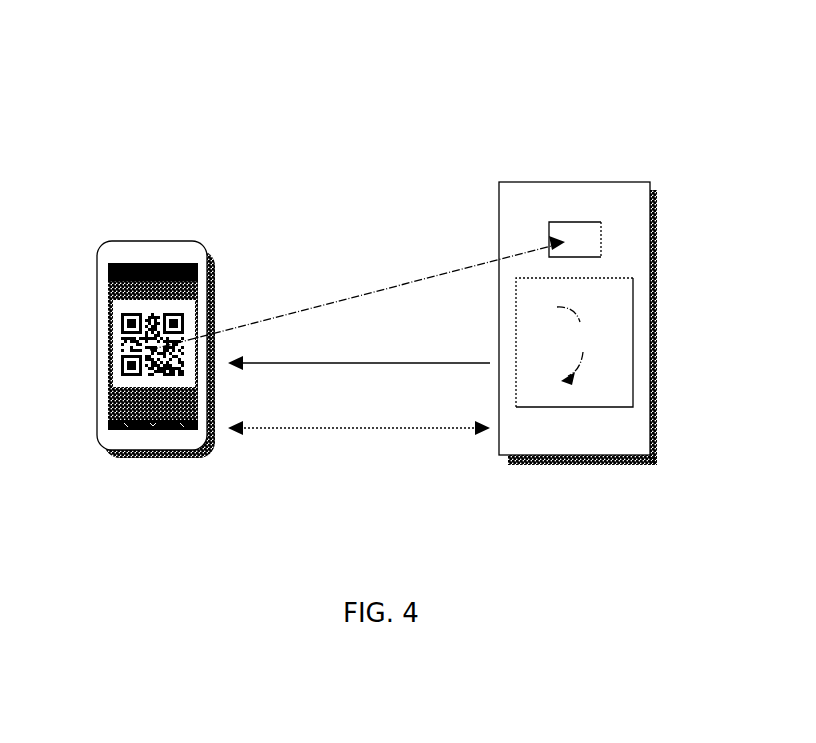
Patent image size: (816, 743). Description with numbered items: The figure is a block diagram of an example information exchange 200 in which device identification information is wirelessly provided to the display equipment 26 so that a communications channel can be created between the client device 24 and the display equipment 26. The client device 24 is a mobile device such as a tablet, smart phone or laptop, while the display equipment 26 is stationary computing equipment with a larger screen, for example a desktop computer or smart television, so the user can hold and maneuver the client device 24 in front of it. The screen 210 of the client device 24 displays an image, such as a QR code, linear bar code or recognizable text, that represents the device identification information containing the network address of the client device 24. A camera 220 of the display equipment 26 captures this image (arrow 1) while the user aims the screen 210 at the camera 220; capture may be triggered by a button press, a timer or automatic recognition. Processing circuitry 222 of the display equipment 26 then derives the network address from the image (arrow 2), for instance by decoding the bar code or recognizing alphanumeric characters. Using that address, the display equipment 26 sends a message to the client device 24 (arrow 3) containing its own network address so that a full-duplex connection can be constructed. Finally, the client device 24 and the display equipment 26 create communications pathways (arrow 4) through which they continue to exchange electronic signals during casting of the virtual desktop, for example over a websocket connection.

The system for code-based login 200 is at (84, 60).
The client device 24 is at (162, 240).
The screen 210 is at (120, 343).
The display equipment 26 is at (583, 183).
The camera 220 is at (603, 240).
The processing circuitry 222 is at (633, 315).
The arrow 1 is at (357, 293).
The arrow 2 is at (586, 346).
The arrow 3 is at (359, 372).
The arrow 4 is at (359, 435).